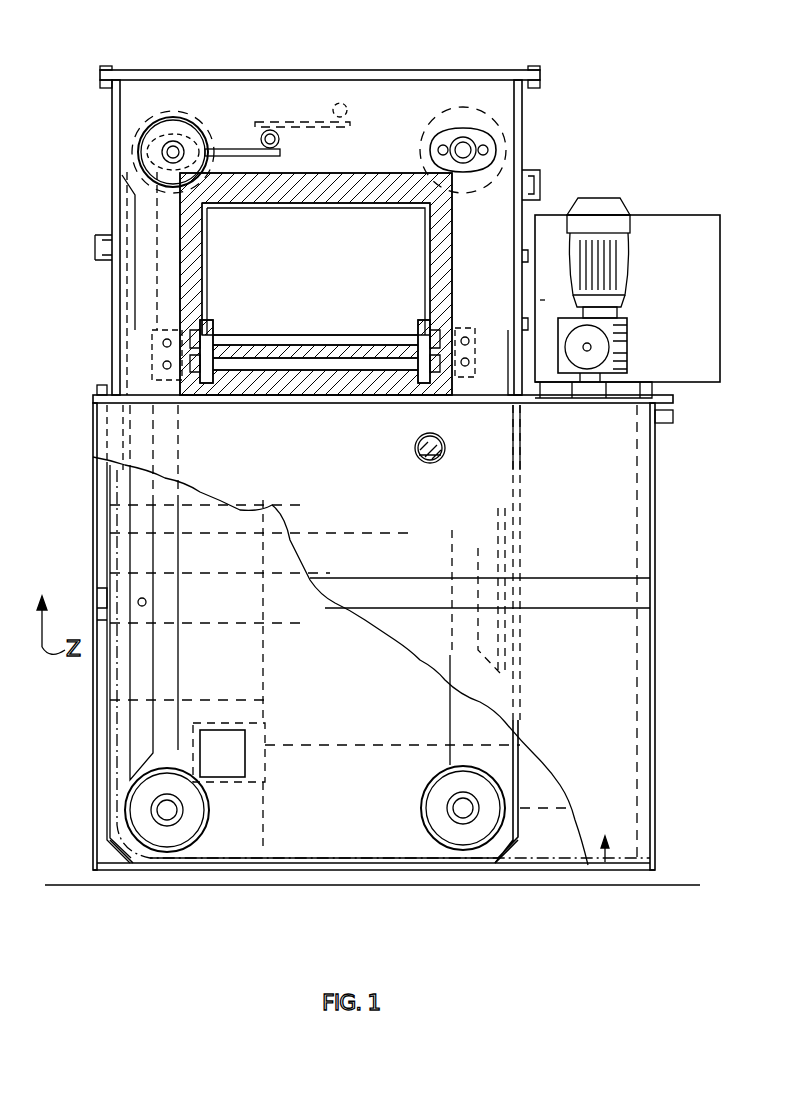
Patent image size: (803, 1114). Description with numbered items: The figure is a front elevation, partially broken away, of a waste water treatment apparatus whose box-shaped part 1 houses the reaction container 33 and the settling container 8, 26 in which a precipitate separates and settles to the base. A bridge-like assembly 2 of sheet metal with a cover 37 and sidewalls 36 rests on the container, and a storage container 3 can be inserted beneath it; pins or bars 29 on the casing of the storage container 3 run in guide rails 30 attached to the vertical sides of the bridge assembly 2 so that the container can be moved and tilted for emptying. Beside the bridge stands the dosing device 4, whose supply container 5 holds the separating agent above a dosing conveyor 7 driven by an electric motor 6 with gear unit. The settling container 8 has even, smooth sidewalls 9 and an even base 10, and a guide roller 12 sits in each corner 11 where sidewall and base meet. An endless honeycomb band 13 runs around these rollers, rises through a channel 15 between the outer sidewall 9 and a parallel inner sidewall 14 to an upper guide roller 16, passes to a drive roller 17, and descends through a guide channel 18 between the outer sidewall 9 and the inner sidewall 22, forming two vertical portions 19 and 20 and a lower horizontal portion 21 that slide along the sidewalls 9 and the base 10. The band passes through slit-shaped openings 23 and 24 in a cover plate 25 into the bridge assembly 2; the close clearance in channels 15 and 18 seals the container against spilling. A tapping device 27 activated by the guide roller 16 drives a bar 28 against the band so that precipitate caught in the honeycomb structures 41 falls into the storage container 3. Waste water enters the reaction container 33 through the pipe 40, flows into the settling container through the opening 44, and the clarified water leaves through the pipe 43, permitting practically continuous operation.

The box-shaped part 1 is at (382, 667).
The bridge-like assembly 2 is at (300, 210).
The storage container 3 is at (316, 284).
The dosing device 4 is at (627, 276).
The supply container 5 is at (607, 293).
The electric motor 6 is at (600, 205).
The dosing conveyor 7 is at (610, 345).
The settling container 8 is at (270, 572).
The sidewalls 9 is at (107, 540).
The base 10 is at (398, 871).
The corners 11 is at (125, 855).
The guide roller 12 is at (178, 830).
The honeycomb band 13 is at (207, 860).
The inner sidewall 14 is at (130, 535).
The channel 15 is at (117, 440).
The upper guide roller 16 is at (185, 125).
The drive roller 17 is at (482, 115).
The guide channel 18 is at (500, 452).
The vertically running portion 19 is at (118, 705).
The vertically running portion 20 is at (512, 640).
The lower horizontal portion 21 is at (290, 860).
The inner sidewall 22 is at (500, 518).
The slit-shaped opening 23 is at (512, 395).
The slit-shaped opening 24 is at (120, 393).
The cover plate 25 is at (342, 403).
The settling container 26 is at (395, 745).
The tapping device 27 is at (303, 128).
The bar 28 is at (340, 112).
The pins or bars 29 is at (290, 345).
The guide rails 30 is at (165, 342).
The reaction container 33 is at (604, 634).
The sidewalls 36 is at (112, 160).
The cover 37 is at (333, 78).
The pipe 40 is at (673, 420).
The honeycomb structures 41 is at (345, 864).
The pipe 43 is at (418, 455).
The opening 44 is at (232, 778).